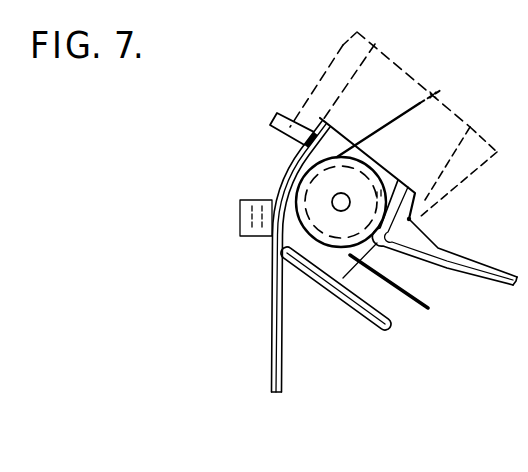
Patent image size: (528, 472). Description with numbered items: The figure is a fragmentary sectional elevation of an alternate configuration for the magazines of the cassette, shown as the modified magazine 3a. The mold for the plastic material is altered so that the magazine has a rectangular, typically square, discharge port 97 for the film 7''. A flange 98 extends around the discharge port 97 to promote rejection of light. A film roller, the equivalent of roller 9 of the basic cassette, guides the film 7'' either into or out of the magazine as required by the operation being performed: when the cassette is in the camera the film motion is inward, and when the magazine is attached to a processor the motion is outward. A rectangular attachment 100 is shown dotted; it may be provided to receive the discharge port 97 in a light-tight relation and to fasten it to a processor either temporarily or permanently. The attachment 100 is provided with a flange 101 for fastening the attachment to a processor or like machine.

The discharge port 97 is at (381, 150).
The roller 9 is at (364, 215).
The flange 98 is at (276, 138).
The modified magazine 3a is at (272, 357).
The rectangular attachment 100 is at (449, 203).
The flange 101 is at (374, 33).
The film 7'' is at (386, 275).